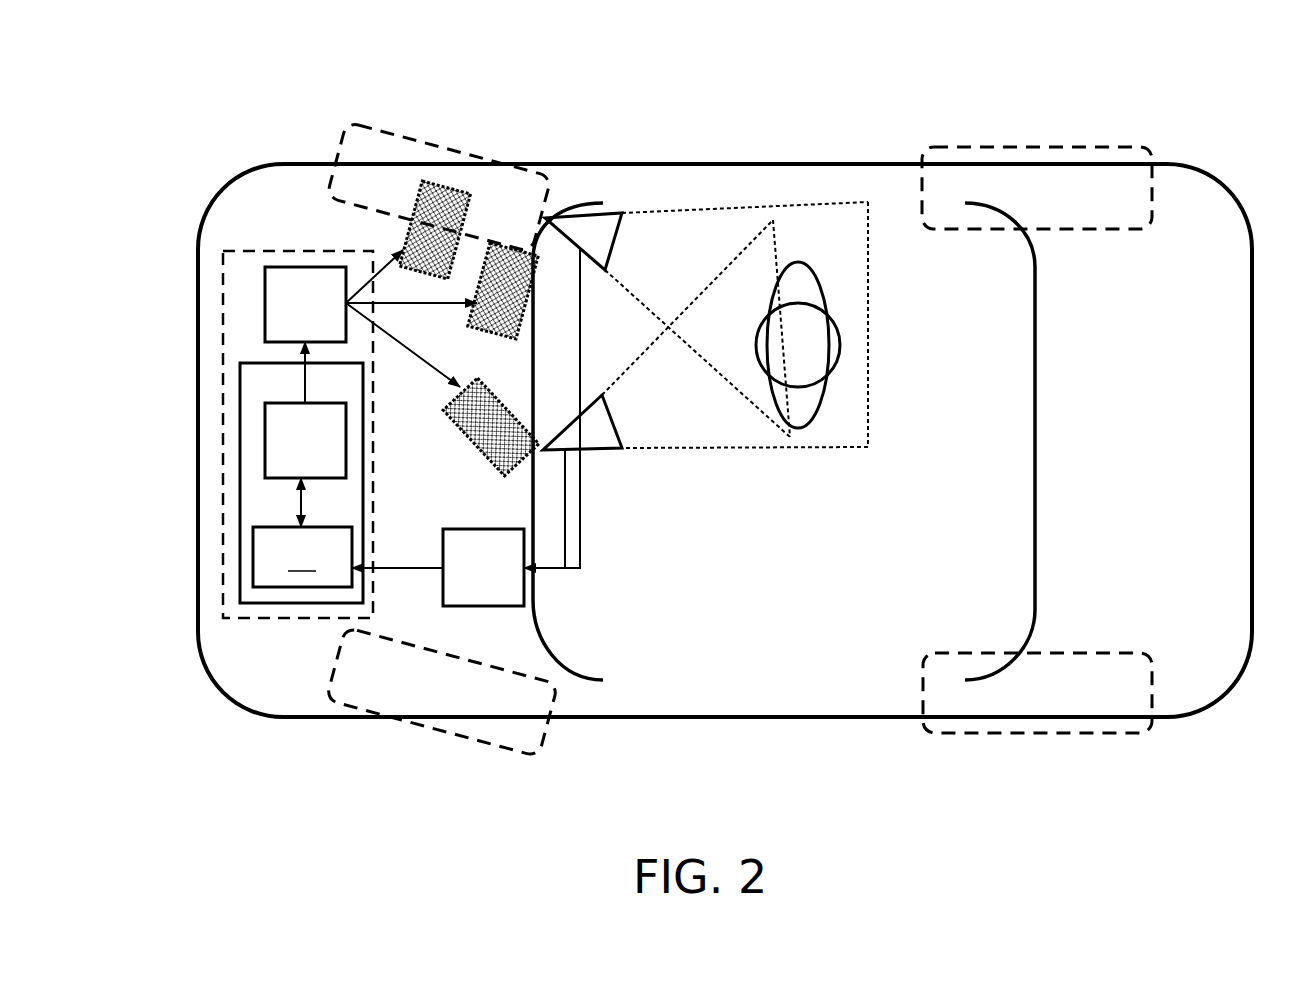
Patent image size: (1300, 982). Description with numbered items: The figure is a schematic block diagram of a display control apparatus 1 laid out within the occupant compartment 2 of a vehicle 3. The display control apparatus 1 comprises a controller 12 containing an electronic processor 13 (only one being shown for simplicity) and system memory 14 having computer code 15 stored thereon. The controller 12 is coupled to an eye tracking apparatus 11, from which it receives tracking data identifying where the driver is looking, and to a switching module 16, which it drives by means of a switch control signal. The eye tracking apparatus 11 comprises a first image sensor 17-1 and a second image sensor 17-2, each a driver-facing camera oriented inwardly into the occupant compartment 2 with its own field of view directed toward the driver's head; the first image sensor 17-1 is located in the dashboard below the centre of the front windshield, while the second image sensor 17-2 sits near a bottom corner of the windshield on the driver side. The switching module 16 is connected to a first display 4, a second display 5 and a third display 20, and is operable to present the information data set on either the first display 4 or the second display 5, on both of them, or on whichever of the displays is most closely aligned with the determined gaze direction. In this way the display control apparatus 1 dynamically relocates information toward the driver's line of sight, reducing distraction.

The display control apparatus 1 is at (248, 657).
The occupant compartment 2 is at (790, 637).
The vehicle 3 is at (1245, 140).
The first display 4 is at (485, 418).
The second display 5 is at (505, 268).
The eye tracking apparatus 11 is at (490, 587).
The controller 12 is at (237, 387).
The electronic processor 13 is at (265, 438).
The system memory 14 is at (255, 557).
The computer code 15 is at (302, 560).
The switching module 16 is at (265, 297).
The first image sensor 17-1 is at (593, 430).
The second image sensor 17-2 is at (602, 227).
The third display 20 is at (448, 200).